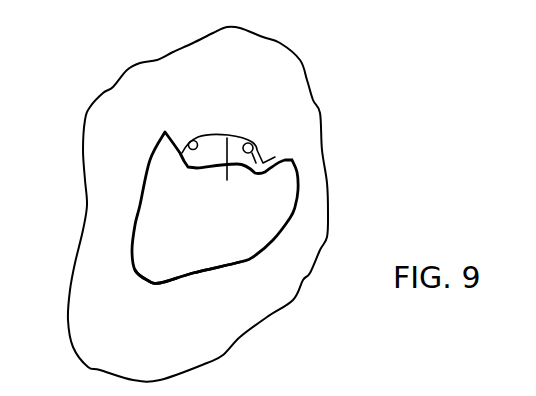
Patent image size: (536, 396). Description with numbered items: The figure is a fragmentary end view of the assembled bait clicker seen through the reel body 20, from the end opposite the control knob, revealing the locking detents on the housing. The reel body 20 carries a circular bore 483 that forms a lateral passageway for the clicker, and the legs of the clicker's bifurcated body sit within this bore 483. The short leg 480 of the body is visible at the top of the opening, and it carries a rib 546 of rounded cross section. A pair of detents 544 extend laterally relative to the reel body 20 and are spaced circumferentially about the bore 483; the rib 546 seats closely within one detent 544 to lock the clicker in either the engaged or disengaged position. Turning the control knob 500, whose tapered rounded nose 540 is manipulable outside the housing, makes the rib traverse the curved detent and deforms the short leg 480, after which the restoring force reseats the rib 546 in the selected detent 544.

The reel body 20 is at (310, 228).
The control knob 500 is at (147, 220).
The rounded nose 540 is at (157, 270).
The short leg 480 is at (250, 160).
The detents 544 is at (200, 143).
The rib 546 is at (256, 152).
The circular bore 483 is at (228, 180).